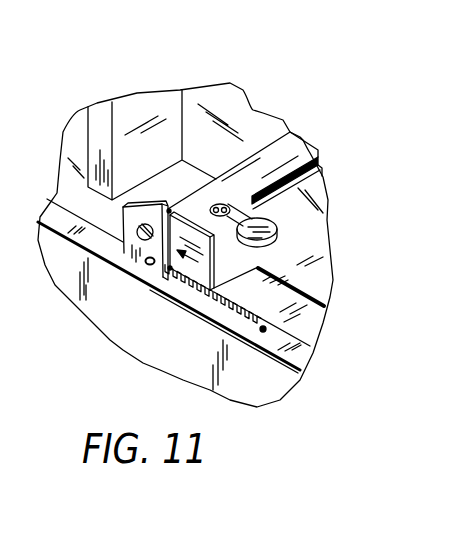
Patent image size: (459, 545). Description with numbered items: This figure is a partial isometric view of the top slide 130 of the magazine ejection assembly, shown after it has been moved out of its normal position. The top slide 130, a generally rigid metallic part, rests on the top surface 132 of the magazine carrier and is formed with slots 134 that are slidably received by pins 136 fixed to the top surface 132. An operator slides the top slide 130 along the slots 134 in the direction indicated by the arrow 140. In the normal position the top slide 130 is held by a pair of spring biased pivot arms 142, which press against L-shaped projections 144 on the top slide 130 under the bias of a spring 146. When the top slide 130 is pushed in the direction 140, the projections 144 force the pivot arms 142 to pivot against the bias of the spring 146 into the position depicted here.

The top slide 130 is at (249, 218).
The top surface 132 is at (304, 145).
The slots 134 is at (178, 158).
The pins 136 is at (247, 190).
The arrow 140 is at (167, 270).
The spring biased pivot arms 142 is at (127, 250).
The L-shaped projections 144 is at (223, 369).
The spring 146 is at (138, 358).